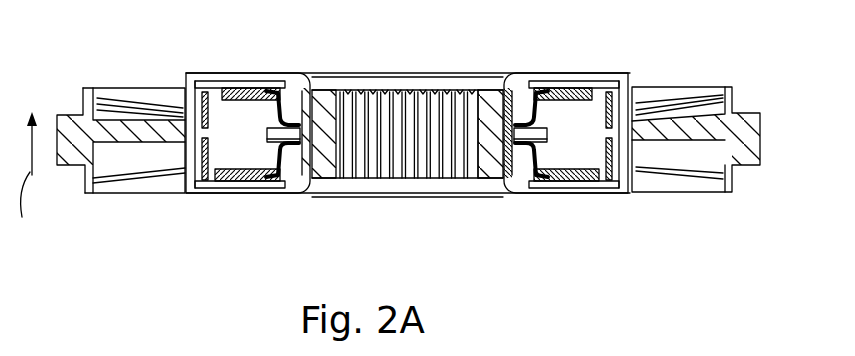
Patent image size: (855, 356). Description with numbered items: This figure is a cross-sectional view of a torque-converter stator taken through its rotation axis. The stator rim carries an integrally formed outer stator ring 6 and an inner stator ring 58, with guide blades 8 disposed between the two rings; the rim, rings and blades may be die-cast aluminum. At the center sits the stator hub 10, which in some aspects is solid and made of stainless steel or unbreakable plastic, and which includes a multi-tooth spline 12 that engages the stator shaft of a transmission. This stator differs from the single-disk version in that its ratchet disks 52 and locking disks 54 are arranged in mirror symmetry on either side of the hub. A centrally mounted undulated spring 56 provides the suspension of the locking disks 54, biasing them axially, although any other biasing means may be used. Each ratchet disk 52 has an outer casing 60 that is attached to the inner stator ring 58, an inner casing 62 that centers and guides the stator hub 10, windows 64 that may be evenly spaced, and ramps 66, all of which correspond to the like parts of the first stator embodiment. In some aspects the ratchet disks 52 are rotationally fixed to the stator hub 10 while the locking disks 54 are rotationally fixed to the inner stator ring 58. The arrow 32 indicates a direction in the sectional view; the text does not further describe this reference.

The outer stator ring 6 is at (71, 122).
The guide blades 8 is at (153, 133).
The stator hub 10 is at (495, 103).
The multi-tooth spline 12 is at (437, 92).
The flow direction arrow 32 is at (34, 176).
The ratchet disks 52 is at (585, 90).
The locking disks 54 is at (560, 92).
The undulated spring 56 is at (285, 137).
The inner stator ring 58 is at (193, 170).
The outer casing 60 is at (603, 168).
The inner casing 62 is at (499, 110).
The windows 64 is at (270, 96).
The ramps 66 is at (227, 88).